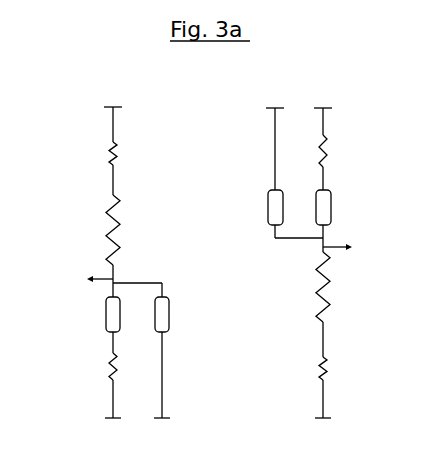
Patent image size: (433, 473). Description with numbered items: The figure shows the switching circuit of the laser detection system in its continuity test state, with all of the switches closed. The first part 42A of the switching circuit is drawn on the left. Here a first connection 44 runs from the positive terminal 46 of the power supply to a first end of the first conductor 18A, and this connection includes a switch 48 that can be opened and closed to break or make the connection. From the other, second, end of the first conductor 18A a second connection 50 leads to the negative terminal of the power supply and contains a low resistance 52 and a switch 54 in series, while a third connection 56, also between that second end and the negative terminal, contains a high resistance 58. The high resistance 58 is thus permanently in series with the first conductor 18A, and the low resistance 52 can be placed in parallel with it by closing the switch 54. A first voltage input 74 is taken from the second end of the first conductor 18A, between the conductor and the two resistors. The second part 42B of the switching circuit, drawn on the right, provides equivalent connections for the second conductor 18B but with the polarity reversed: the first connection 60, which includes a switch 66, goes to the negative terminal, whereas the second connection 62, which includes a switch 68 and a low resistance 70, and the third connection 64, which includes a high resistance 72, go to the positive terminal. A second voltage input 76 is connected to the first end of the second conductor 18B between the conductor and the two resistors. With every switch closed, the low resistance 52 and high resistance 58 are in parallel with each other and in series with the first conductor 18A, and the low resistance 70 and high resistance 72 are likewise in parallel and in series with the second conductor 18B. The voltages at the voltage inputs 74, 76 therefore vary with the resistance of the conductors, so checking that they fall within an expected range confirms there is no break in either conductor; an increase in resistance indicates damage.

The first part of the switching circuit 42A is at (106, 71).
The positive terminal 46 is at (110, 107).
The first connection 44 is at (112, 126).
The switch 48 is at (117, 155).
The first conductor 18A is at (107, 213).
The first voltage input 74 is at (99, 277).
The high resistance 58 is at (166, 299).
The low resistance 52 is at (108, 328).
The second connection 50 is at (112, 347).
The switch 54 is at (113, 372).
The third connection 56 is at (163, 376).
The second part of the switching circuit 42B is at (349, 74).
The third connection 64 is at (275, 147).
The switch 68 is at (320, 147).
The second connection 62 is at (327, 170).
The high resistance 72 is at (268, 192).
The low resistance 70 is at (331, 191).
The second voltage input 76 is at (333, 251).
The second conductor 18B is at (332, 295).
The first connection 60 is at (323, 338).
The switch 66 is at (322, 368).